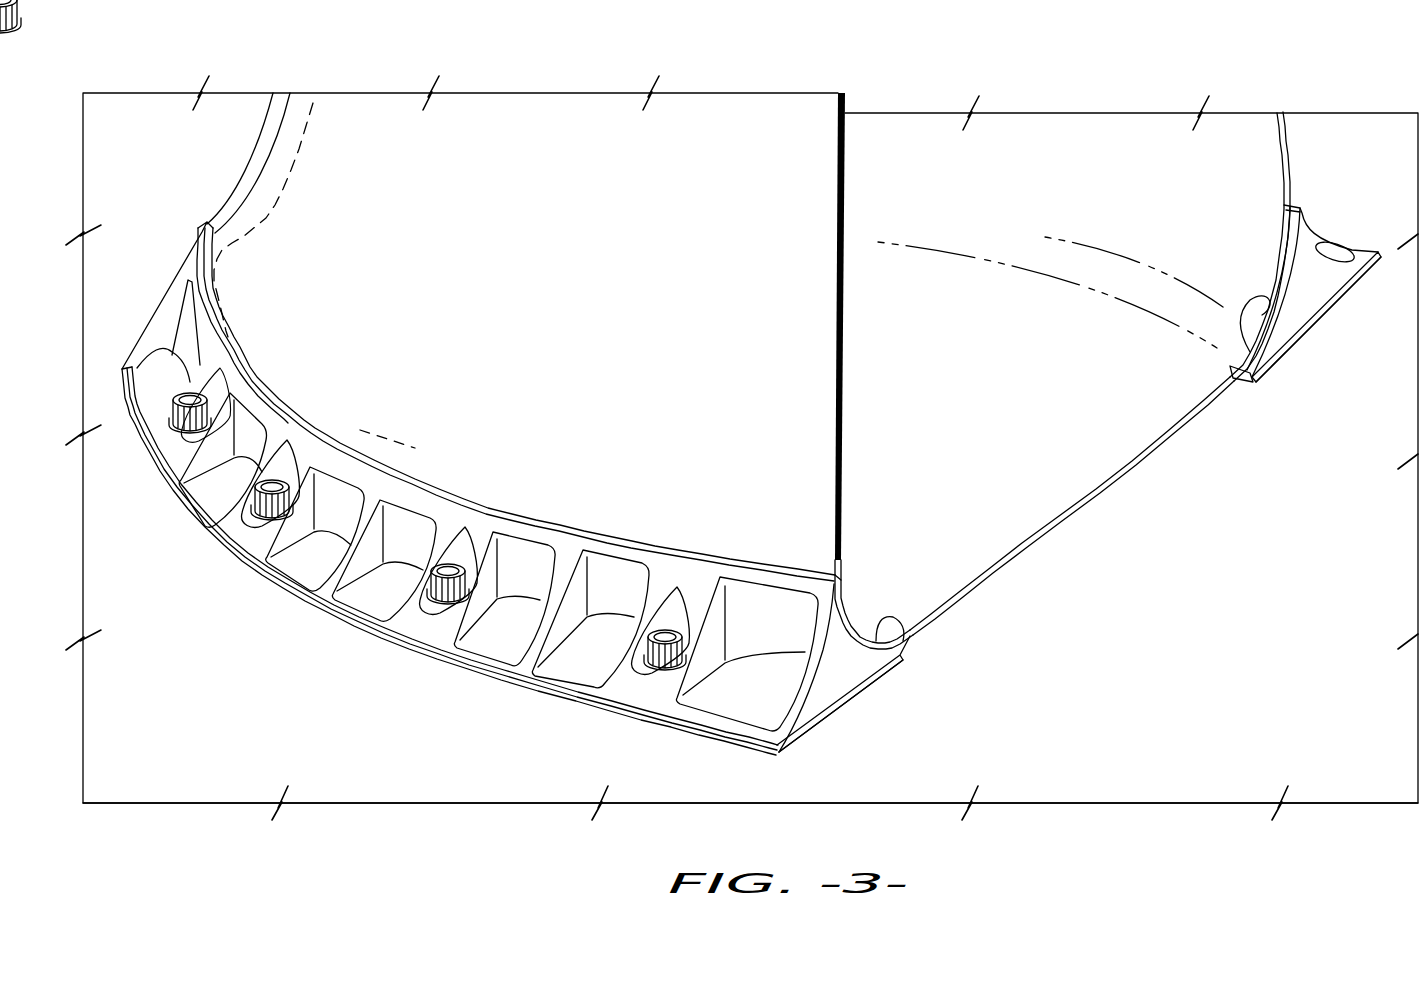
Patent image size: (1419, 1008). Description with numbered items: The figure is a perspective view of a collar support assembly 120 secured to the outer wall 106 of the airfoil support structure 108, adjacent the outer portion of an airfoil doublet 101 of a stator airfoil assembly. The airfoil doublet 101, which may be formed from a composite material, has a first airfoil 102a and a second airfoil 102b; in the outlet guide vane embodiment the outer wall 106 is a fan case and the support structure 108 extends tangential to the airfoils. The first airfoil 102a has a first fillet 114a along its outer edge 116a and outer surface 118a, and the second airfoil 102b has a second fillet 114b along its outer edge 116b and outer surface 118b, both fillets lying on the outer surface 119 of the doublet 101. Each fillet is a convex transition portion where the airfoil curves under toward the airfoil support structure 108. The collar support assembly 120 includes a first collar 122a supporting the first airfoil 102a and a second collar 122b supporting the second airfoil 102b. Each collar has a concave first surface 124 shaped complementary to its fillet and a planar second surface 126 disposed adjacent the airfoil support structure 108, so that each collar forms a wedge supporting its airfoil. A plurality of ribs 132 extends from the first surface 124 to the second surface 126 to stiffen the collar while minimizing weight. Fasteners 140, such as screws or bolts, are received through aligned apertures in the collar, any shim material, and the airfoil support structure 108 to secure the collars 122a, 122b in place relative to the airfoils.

The airfoil doublet 101 is at (791, 342).
The first airfoil 102a is at (523, 108).
The second airfoil 102b is at (1127, 226).
The outer wall 106 is at (1296, 676).
The airfoil support structure 108 is at (1118, 755).
The first fillet 114a is at (843, 637).
The second fillet 114b is at (1275, 280).
The outer edge of the first airfoil 116a is at (925, 632).
The outer edge of the second airfoil 116b is at (1232, 388).
The outer surface of the first airfoil 118a is at (795, 312).
The outer surface of the second airfoil 118b is at (1290, 182).
The outer surface of the doublet 119 is at (1095, 497).
The collar support assembly 120 is at (420, 377).
The first collar 122a is at (372, 500).
The second collar 122b is at (1340, 242).
The first surface 124 is at (897, 642).
The second surface 126 is at (832, 712).
The ribs 132 is at (580, 600).
The fastener 140 is at (183, 390).